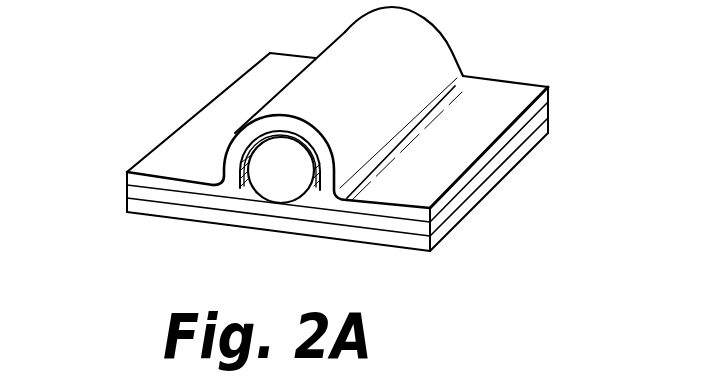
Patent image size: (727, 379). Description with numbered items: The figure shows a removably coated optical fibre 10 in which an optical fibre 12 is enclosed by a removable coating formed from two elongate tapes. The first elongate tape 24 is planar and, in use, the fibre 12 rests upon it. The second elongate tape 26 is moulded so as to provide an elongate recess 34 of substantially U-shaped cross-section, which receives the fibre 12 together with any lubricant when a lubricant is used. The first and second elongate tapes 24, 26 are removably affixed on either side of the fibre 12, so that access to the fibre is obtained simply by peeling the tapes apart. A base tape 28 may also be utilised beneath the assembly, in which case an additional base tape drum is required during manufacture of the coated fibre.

The removably coated optical fibre 10 is at (320, 167).
The optical fibre 12 is at (283, 188).
The first elongate tape 24 is at (503, 160).
The second elongate tape 26 is at (510, 98).
The base tape 28 is at (147, 207).
The elongate recess 34 is at (247, 186).